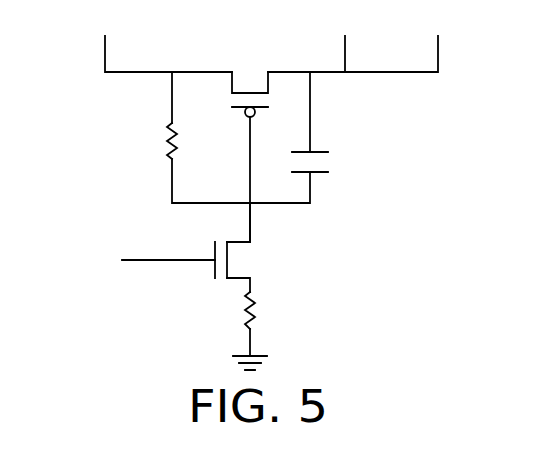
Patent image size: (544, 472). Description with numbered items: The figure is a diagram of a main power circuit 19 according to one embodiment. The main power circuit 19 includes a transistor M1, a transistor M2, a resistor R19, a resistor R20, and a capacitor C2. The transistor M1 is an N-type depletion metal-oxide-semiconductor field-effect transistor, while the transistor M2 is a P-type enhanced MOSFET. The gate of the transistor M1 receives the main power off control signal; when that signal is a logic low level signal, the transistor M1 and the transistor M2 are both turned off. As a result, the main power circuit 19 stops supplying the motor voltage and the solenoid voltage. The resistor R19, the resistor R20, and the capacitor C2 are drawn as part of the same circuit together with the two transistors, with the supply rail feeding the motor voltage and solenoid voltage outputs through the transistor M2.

The main power circuit 19 is at (258, 186).
The transistor M2 is at (250, 80).
The resistor R19 is at (152, 141).
The capacitor C2 is at (323, 162).
The transistor M1 is at (248, 247).
The resistor R20 is at (269, 310).